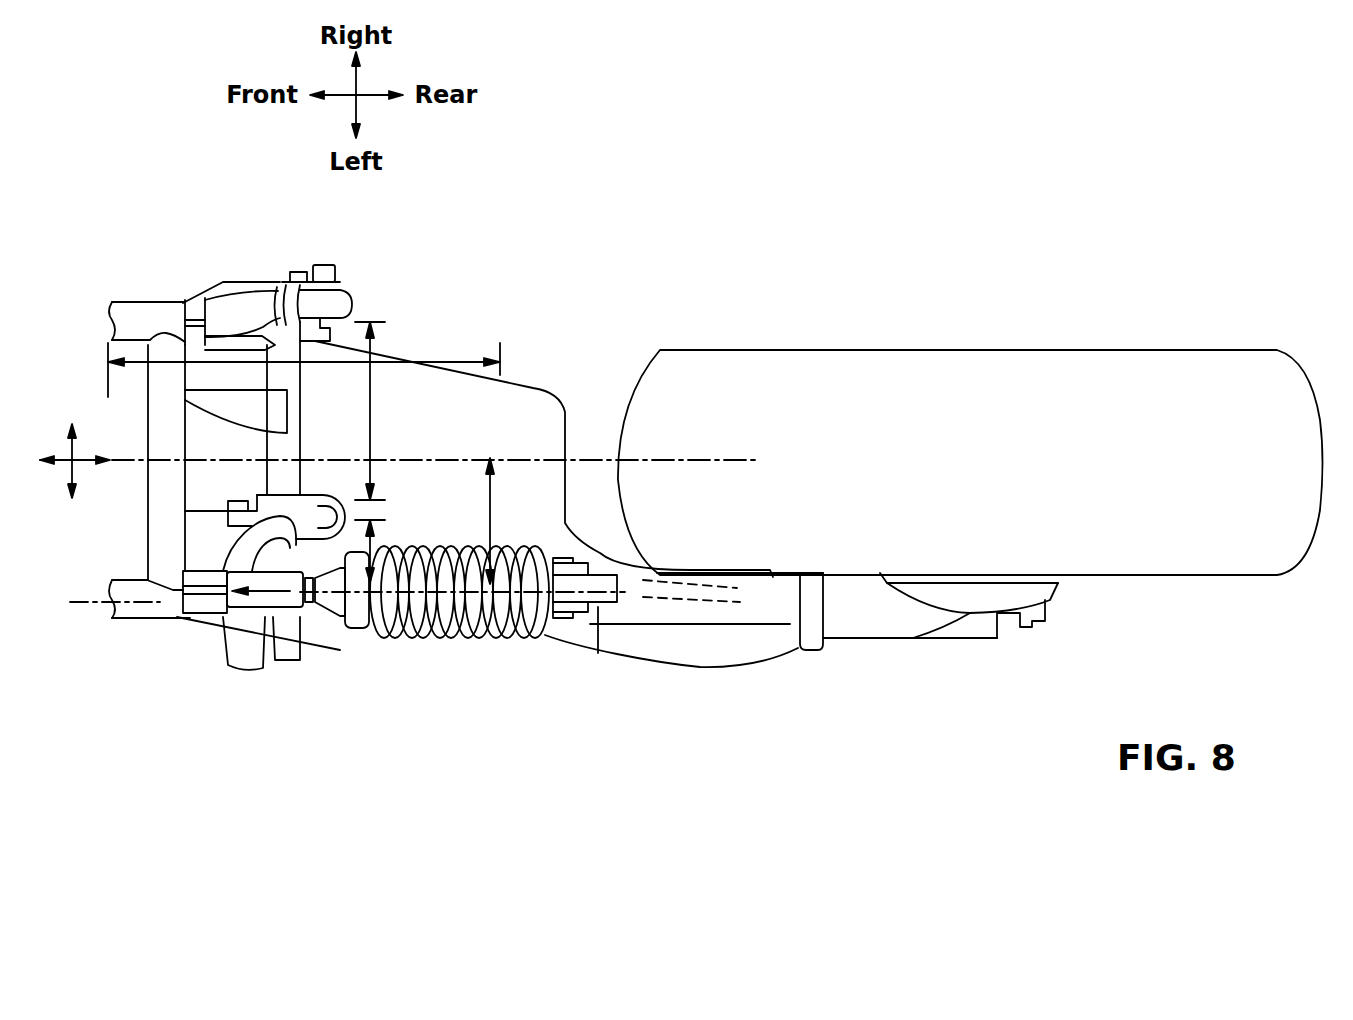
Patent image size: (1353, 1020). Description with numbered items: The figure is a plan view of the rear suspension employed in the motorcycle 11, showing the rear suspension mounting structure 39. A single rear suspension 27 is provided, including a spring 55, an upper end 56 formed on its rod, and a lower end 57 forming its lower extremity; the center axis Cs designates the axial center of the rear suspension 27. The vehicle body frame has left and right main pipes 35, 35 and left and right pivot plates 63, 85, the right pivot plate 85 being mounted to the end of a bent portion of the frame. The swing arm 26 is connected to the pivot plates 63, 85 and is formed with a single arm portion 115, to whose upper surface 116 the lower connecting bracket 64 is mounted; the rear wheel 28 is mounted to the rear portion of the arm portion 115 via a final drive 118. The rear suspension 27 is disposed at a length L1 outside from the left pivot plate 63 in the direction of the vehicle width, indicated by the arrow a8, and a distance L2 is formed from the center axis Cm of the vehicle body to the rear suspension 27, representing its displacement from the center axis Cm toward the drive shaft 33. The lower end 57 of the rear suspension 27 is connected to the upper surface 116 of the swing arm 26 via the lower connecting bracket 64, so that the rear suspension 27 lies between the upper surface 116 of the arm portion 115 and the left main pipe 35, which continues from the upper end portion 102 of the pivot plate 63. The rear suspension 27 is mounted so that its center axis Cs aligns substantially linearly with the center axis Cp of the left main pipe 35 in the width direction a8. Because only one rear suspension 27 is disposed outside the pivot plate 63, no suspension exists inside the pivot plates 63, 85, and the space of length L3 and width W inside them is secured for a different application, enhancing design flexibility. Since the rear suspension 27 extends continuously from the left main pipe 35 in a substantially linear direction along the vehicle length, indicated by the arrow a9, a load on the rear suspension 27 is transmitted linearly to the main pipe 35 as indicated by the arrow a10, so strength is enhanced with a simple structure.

The motorcycle 11 is at (177, 208).
The main pipe 35 is at (128, 302).
The right pivot plate 85 is at (352, 300).
The swing arm 26 is at (538, 374).
The rear wheel 28 is at (797, 350).
The left pivot plate 63 is at (270, 495).
The upper end portion 102 is at (250, 527).
The upper end 56 is at (297, 617).
The spring 55 is at (497, 632).
The lower end 57 is at (583, 608).
The lower connecting bracket 64 is at (603, 610).
The upper surface 116 is at (647, 646).
The arm portion 115 is at (698, 668).
The drive shaft 33 is at (725, 603).
The final drive 118 is at (897, 648).
The rear suspension 27 is at (433, 665).
The rear suspension mounting structure 39 is at (397, 695).
The center axis of the vehicle body Cm is at (425, 460).
The center axis of the left main pipe Cp is at (147, 617).
The center axis of the rear suspension Cs is at (347, 623).
The arrow indicating vehicle width direction a8 is at (74, 405).
The arrow indicating vehicle length direction a9 is at (78, 460).
The arrow indicating load transmission a10 is at (263, 598).
The width W is at (376, 411).
The length L1 is at (386, 544).
The distance L2 is at (508, 521).
The length L3 is at (304, 364).